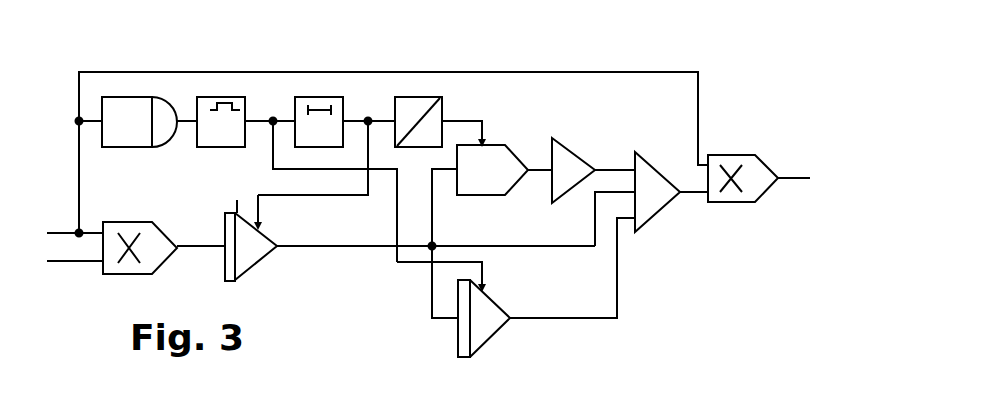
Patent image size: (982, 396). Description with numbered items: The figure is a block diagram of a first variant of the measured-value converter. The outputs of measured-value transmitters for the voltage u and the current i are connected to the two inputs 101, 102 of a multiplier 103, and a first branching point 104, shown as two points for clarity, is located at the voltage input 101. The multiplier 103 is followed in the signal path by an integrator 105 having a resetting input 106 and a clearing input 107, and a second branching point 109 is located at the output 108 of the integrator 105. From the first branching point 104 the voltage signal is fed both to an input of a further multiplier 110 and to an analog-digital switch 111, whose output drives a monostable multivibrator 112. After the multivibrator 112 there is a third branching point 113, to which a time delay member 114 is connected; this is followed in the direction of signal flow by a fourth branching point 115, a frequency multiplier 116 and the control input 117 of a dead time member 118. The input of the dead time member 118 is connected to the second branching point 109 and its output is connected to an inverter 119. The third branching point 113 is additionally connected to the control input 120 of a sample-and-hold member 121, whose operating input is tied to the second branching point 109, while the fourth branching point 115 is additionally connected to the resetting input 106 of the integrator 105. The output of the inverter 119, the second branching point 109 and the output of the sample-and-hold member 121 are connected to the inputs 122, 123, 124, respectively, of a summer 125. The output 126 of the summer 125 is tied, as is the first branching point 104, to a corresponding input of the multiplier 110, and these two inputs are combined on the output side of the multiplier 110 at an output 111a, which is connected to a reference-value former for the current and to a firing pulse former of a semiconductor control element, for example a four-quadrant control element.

The voltage input 101 is at (52, 228).
The current input 102 is at (58, 263).
The multiplier 103 is at (130, 222).
The first branching point 104 is at (81, 125).
The integrator 105 is at (256, 267).
The resetting input 106 is at (262, 212).
The clearing input 107 is at (232, 195).
The output of the integrator 108 is at (285, 249).
The second branching point 109 is at (435, 242).
The multiplier 110 is at (735, 155).
The analog-digital switch 111 is at (114, 97).
The output 111a is at (788, 180).
The monostable multivibrator 112 is at (207, 97).
The third branching point 113 is at (273, 118).
The time delay member 114 is at (320, 97).
The fourth branching point 115 is at (368, 118).
The frequency multiplier 116 is at (442, 105).
The control input 117 is at (484, 128).
The dead time member 118 is at (528, 150).
The inverter 119 is at (572, 160).
The control input 120 is at (485, 264).
The sample-and-hold member 121 is at (490, 340).
The input of the summer 122 is at (618, 168).
The input of the summer 123 is at (615, 192).
The input of the summer 124 is at (614, 222).
The summer 125 is at (660, 222).
The output of the summer 126 is at (684, 190).